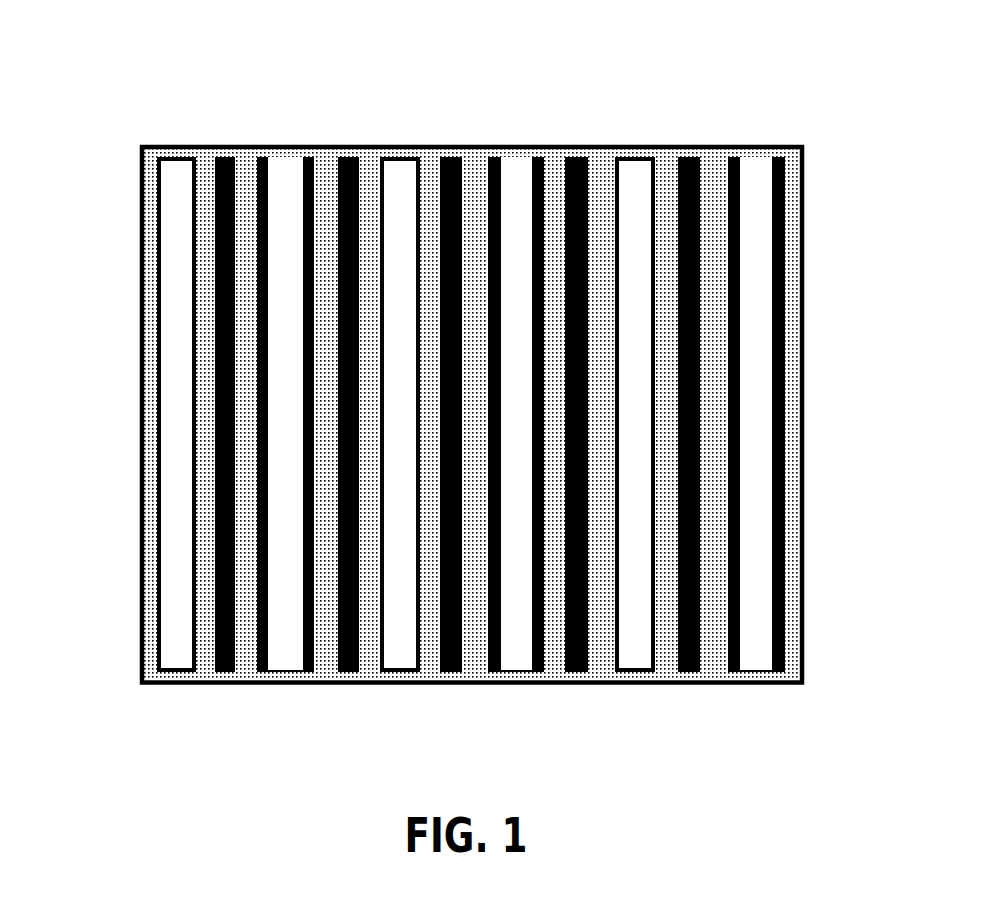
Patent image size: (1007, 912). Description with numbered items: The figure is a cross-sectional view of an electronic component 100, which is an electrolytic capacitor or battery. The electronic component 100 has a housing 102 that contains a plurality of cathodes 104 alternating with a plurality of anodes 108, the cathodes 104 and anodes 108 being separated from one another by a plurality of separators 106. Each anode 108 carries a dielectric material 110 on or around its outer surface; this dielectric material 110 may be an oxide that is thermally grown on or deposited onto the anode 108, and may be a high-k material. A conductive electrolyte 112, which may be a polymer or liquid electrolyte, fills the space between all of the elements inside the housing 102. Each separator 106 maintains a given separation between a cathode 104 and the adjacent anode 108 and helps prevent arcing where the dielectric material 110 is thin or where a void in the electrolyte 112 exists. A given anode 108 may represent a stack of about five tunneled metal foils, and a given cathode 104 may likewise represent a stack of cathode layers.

The electronic component 100 is at (510, 46).
The housing 102 is at (804, 178).
The cathode 104 is at (172, 672).
The separator 106 is at (235, 672).
The anode 108 is at (492, 416).
The dielectric material 110 is at (255, 158).
The conductive electrolyte 112 is at (668, 172).